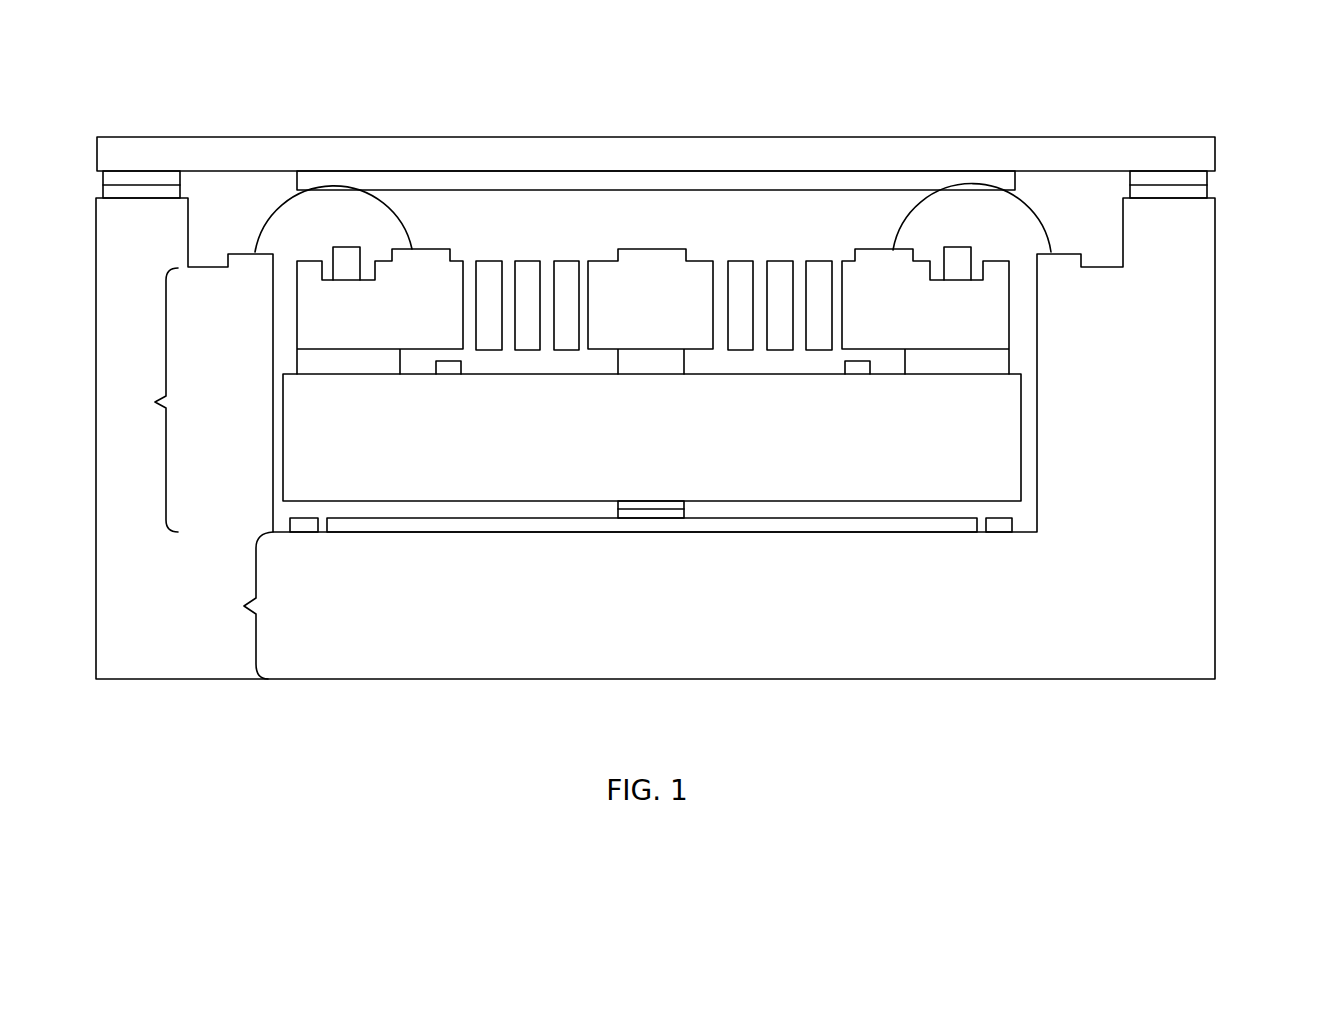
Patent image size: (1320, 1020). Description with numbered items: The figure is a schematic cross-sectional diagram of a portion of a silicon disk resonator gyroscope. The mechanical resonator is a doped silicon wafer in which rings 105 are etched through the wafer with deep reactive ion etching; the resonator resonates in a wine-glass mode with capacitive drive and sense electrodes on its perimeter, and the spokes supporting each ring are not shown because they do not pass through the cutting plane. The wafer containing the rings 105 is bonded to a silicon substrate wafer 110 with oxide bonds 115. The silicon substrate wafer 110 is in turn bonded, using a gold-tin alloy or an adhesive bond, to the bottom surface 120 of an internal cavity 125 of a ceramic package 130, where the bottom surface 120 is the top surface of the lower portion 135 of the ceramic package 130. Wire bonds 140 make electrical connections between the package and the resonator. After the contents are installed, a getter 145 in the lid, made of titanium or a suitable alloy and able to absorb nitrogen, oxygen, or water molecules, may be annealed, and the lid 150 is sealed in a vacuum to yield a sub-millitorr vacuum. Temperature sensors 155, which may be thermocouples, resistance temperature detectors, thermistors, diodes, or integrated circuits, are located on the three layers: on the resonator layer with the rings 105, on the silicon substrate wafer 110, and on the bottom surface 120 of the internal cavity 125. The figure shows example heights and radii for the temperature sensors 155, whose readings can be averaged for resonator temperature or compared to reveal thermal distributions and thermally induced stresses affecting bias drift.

The rings 105 is at (488, 261).
The silicon substrate wafer 110 is at (608, 479).
The oxide bonds 115 is at (347, 367).
The bottom surface 120 is at (1028, 527).
The internal cavity 125 is at (139, 400).
The ceramic package 130 is at (1215, 432).
The lower portion 135 is at (230, 605).
The wire bonds 140 is at (258, 248).
The getter 145 is at (296, 178).
The lid 150 is at (655, 137).
The temperature sensors 155 is at (342, 256).